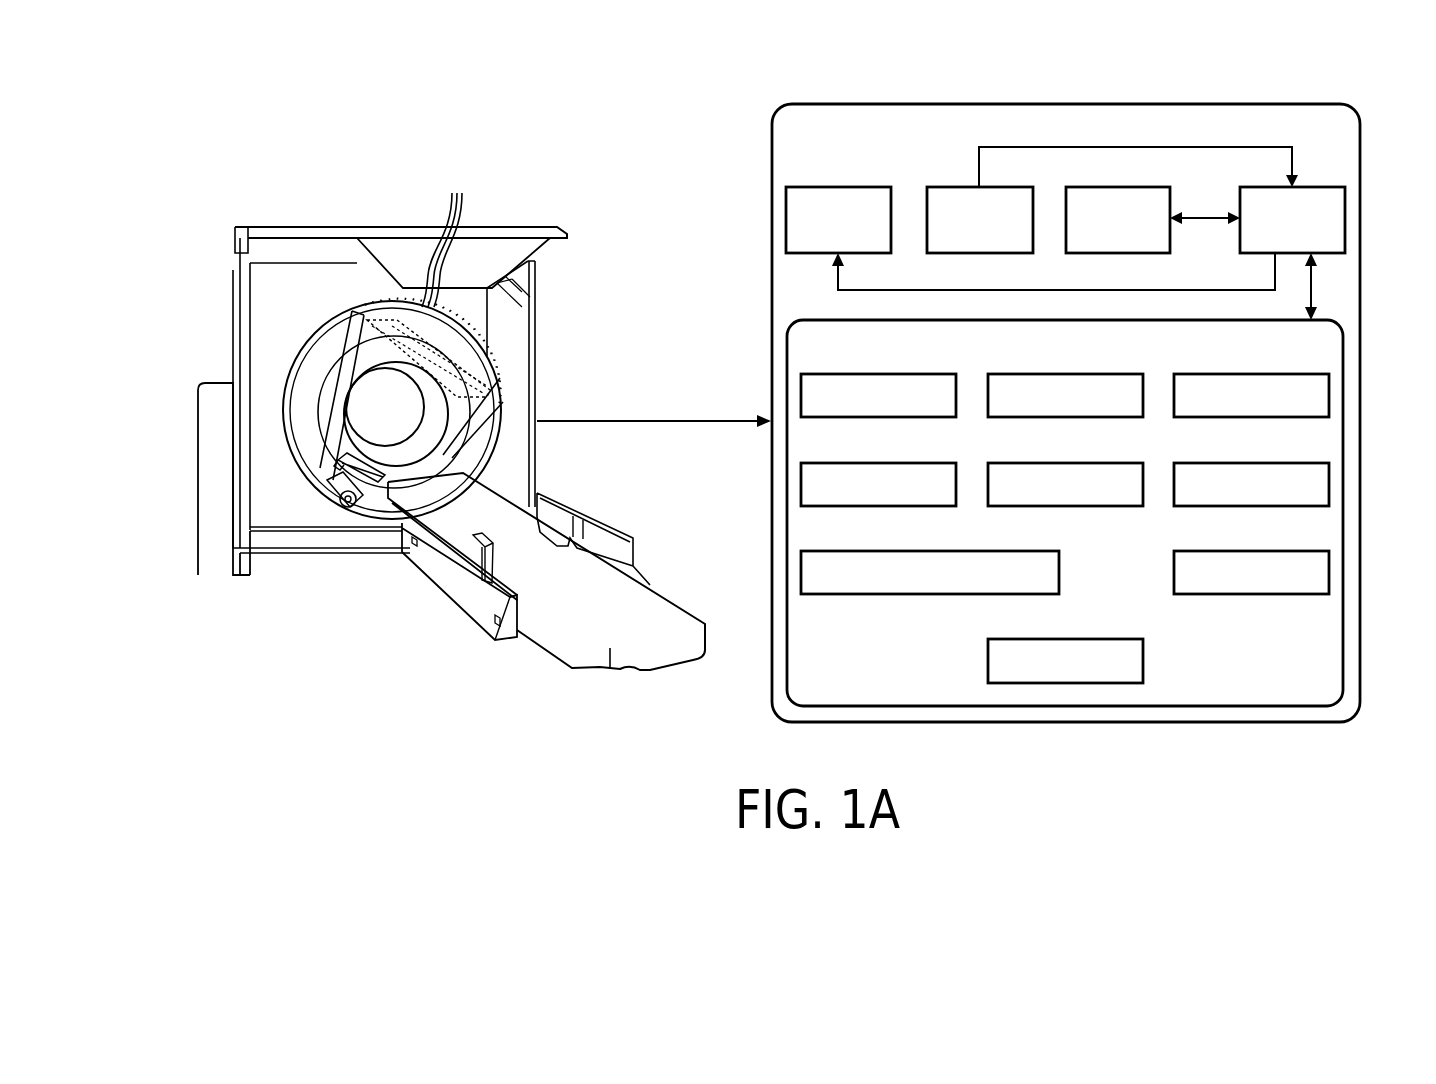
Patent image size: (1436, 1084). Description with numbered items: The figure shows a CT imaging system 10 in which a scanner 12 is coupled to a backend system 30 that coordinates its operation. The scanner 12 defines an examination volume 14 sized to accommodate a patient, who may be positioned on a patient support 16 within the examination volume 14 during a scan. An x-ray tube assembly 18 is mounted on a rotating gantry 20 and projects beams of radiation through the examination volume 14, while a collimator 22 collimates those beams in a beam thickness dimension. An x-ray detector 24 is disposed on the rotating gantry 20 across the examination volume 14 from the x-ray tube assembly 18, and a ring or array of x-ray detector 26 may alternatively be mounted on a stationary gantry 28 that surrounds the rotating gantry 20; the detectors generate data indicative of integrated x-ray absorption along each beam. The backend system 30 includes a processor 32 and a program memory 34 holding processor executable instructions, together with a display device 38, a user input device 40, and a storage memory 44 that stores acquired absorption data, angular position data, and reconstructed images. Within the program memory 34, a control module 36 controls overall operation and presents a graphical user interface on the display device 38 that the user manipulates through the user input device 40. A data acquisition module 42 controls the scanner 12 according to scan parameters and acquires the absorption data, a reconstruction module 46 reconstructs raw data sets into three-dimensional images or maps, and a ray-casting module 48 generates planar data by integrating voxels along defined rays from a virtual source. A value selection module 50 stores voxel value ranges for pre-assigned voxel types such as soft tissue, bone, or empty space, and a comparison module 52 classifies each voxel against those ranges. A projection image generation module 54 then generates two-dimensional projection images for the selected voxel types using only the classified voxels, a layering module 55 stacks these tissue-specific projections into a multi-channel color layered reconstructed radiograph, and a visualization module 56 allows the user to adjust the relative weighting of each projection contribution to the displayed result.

The imaging system 10 is at (322, 124).
The scanner 12 is at (252, 658).
The examination volume 14 is at (370, 417).
The patient support 16 is at (628, 677).
The x-ray tube assembly 18 is at (348, 508).
The rotating gantry 20 is at (468, 410).
The collimator 22 is at (372, 478).
The x-ray detector 24 is at (472, 378).
The x-ray detector 26 is at (446, 237).
The stationary gantry 28 is at (353, 316).
The backend system 30 is at (770, 123).
The processor 32 is at (1345, 218).
The program memory 34 is at (787, 338).
The control module 36 is at (801, 395).
The display device 38 is at (786, 218).
The user input device 40 is at (995, 253).
The data acquisition module 42 is at (1085, 417).
The storage memory 44 is at (1136, 253).
The reconstruction module 46 is at (1329, 395).
The ray-casting module 48 is at (801, 485).
The value selection module 50 is at (1085, 506).
The comparison module 52 is at (1329, 485).
The projection image generation module 54 is at (801, 572).
The layering module 55 is at (1329, 572).
The visualization module 56 is at (1143, 660).